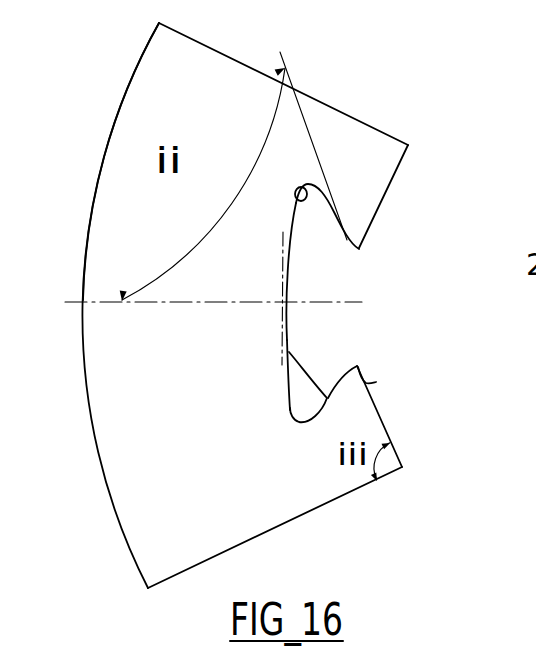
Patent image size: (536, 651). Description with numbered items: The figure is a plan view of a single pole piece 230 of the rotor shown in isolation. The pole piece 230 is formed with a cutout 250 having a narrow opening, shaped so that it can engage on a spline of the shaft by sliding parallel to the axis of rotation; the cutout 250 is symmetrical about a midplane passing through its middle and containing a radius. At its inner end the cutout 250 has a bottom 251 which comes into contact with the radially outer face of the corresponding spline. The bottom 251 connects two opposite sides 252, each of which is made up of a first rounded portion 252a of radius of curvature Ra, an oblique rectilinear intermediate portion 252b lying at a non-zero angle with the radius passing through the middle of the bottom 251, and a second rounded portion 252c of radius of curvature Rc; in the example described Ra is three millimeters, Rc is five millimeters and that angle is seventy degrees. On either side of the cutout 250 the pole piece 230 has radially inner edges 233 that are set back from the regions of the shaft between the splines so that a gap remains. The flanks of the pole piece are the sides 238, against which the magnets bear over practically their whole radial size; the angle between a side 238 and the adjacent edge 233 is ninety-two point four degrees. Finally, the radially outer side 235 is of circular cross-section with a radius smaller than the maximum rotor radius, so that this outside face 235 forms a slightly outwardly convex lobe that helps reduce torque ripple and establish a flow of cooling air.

The pole piece 230 is at (118, 418).
The radially inner edge 233 is at (390, 187).
The radially outer side 235 is at (99, 176).
The side 238 is at (198, 40).
The cutout 250 is at (330, 328).
The bottom 251 is at (288, 277).
The side 252 is at (341, 215).
The first rounded portion 252a is at (297, 201).
The oblique rectilinear intermediate portion 252b is at (287, 350).
The second rounded portion 252c is at (359, 250).